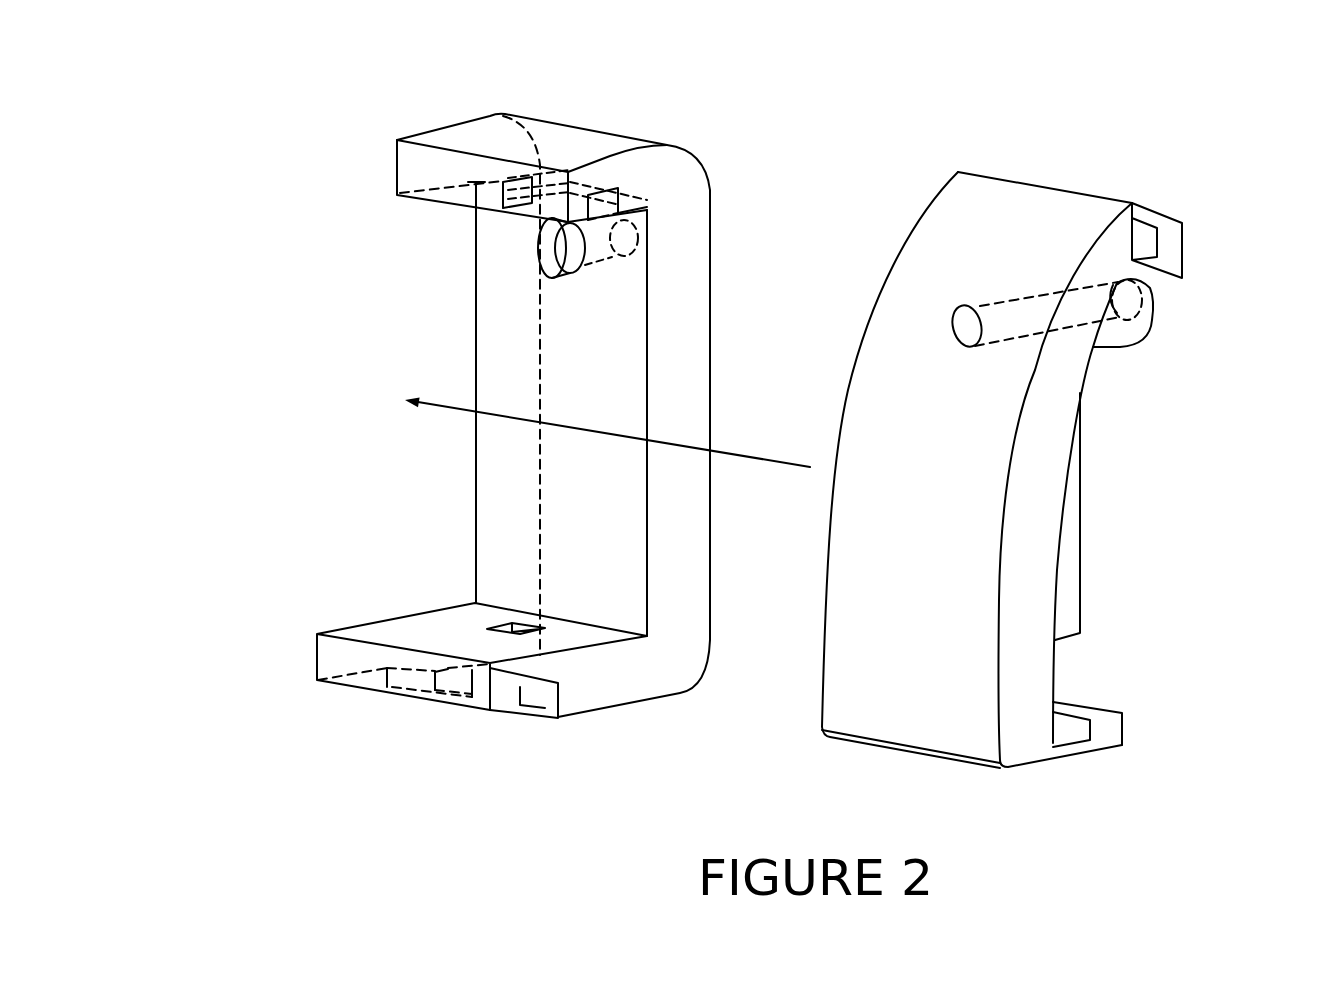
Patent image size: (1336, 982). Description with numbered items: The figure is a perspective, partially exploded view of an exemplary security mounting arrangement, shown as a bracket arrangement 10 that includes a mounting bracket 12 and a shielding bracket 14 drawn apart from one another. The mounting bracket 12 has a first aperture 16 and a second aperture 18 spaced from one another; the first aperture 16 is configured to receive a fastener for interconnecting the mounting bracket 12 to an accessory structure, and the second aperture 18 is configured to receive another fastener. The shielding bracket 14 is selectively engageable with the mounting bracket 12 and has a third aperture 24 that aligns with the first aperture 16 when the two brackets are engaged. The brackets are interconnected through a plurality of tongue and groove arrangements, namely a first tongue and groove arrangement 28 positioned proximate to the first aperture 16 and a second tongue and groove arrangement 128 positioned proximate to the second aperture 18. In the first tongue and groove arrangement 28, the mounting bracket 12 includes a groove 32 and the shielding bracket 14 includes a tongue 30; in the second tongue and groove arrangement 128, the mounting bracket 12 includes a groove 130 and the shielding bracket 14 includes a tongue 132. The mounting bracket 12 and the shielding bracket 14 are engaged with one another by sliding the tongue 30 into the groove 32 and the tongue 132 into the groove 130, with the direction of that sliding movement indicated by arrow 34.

The bracket arrangement 10 is at (235, 258).
The mounting bracket 12 is at (333, 714).
The shielding bracket 14 is at (1196, 97).
The first aperture 16 is at (550, 253).
The second aperture 18 is at (505, 622).
The third aperture 24 is at (958, 306).
The first tongue and groove arrangement 28 is at (372, 152).
The tongue 30 is at (1150, 222).
The groove 32 is at (523, 203).
The arrow 34 is at (460, 408).
The second tongue and groove arrangement 128 is at (281, 635).
The groove 130 is at (512, 698).
The tongue 132 is at (1062, 748).